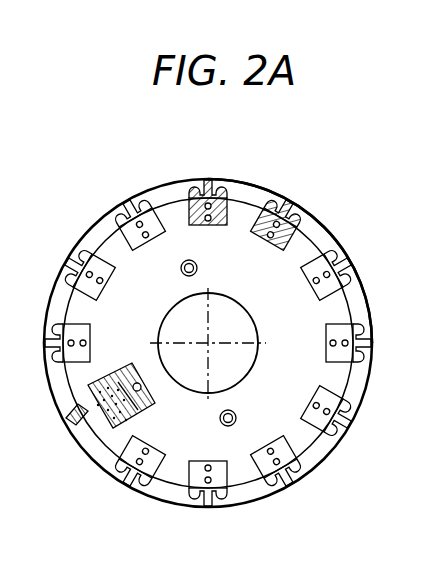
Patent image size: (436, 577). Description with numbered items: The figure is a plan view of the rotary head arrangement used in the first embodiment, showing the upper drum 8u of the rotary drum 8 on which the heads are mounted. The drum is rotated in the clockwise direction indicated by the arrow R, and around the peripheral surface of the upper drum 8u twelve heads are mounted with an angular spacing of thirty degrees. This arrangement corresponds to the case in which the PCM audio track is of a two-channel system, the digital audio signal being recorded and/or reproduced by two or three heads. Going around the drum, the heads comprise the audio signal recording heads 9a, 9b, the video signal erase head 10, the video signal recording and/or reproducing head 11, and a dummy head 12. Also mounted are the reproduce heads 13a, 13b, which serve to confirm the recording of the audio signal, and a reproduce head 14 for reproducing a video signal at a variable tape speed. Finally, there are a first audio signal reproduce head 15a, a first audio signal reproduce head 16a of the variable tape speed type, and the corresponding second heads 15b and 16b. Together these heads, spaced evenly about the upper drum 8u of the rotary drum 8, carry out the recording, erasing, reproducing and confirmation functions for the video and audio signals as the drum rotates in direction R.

The arrow R is at (108, 120).
The rotary drum 8 is at (188, 513).
The upper drum 8u is at (369, 290).
The audio signal recording head 9a is at (372, 356).
The audio signal recording head 9b is at (343, 252).
The video signal erase head 10 is at (287, 196).
The video signal recording and/or reproducing head 11 is at (212, 183).
The dummy head 12 is at (139, 200).
The reproduce head 13a is at (78, 259).
The reproduce head 13b is at (50, 352).
The reproduce head 14 is at (82, 427).
The first audio signal reproduce head 15a is at (122, 473).
The second audio signal reproduce head 15b is at (296, 485).
The first audio signal reproduce head of variable tape speed type 16a is at (218, 505).
The second audio signal reproduce head of variable tape speed type 16b is at (351, 425).